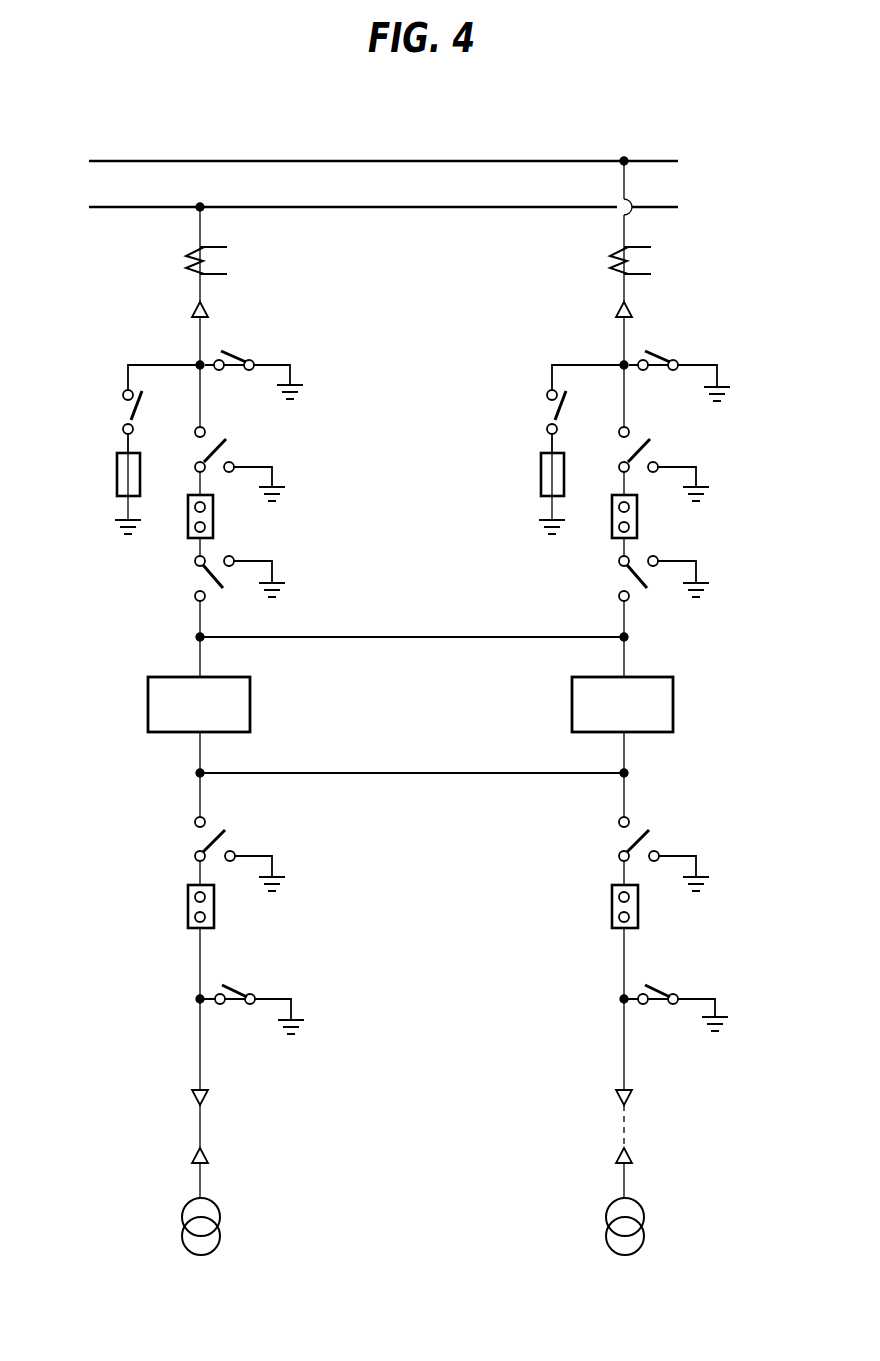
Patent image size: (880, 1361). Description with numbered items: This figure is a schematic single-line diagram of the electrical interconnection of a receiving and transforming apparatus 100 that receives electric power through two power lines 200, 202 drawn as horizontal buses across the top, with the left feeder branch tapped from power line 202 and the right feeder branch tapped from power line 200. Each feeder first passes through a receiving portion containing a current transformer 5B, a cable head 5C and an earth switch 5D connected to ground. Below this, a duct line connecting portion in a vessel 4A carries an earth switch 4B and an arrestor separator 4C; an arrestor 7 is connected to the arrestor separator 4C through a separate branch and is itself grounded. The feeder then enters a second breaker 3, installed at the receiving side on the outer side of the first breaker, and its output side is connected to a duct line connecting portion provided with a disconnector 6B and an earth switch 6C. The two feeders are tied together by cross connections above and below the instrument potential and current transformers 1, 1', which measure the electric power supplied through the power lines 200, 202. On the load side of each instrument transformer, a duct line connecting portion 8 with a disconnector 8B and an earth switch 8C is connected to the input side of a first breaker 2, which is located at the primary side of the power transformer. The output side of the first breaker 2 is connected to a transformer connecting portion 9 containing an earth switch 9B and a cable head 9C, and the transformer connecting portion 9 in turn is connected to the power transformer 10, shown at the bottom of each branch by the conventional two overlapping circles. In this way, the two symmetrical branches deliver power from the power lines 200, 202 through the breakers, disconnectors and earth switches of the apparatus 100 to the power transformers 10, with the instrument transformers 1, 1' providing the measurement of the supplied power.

The power line 200 is at (430, 160).
The power line 202 is at (430, 206).
The receiving and transforming apparatus 100 is at (503, 723).
The current transformer 5B is at (190, 262).
The cable head 5C is at (196, 306).
The earth switch 5D is at (224, 350).
The arrestor separator 4C is at (124, 418).
The arrestor 7 is at (117, 462).
The vessel 4A is at (214, 440).
The earth switch 4B is at (280, 487).
The second breaker 3 is at (214, 520).
The earth switch 6C is at (272, 560).
The disconnector 6B is at (195, 576).
The instrument potential and current transformer 1 is at (178, 696).
The instrument potential and current transformer 1' is at (602, 696).
The duct line connecting portion 8 is at (178, 828).
The disconnector 8B is at (195, 838).
The earth switch 8C is at (266, 856).
The first breaker 2 is at (214, 908).
The transformer connecting portion 9 is at (180, 997).
The earth switch 9B is at (233, 986).
The cable head 9C is at (192, 1090).
The power transformer 10 is at (210, 1203).